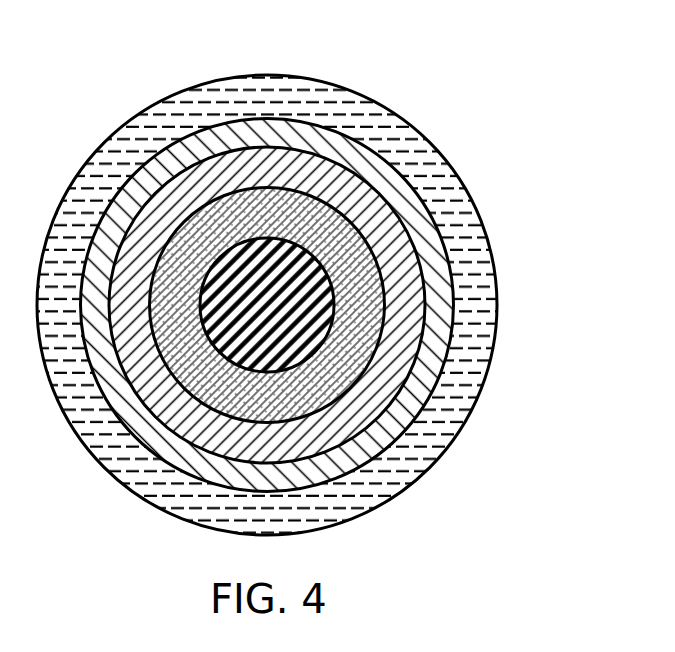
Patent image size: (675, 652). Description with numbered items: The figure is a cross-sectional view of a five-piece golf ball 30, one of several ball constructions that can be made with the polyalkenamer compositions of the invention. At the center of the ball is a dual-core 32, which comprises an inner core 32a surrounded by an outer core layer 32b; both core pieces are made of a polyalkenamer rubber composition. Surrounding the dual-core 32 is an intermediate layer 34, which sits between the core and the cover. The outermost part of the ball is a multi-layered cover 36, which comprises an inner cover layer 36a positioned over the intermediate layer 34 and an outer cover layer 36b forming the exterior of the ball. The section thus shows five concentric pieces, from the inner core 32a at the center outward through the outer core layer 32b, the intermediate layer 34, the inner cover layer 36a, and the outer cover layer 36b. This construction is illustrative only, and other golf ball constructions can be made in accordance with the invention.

The five-piece golf ball 30 is at (409, 78).
The dual-core 32 is at (552, 195).
The inner core 32a is at (308, 275).
The outer core layer 32b is at (353, 298).
The intermediate layer 34 is at (403, 327).
The multi-layered cover 36 is at (546, 378).
The inner cover layer 36a is at (447, 428).
The outer cover layer 36b is at (427, 390).